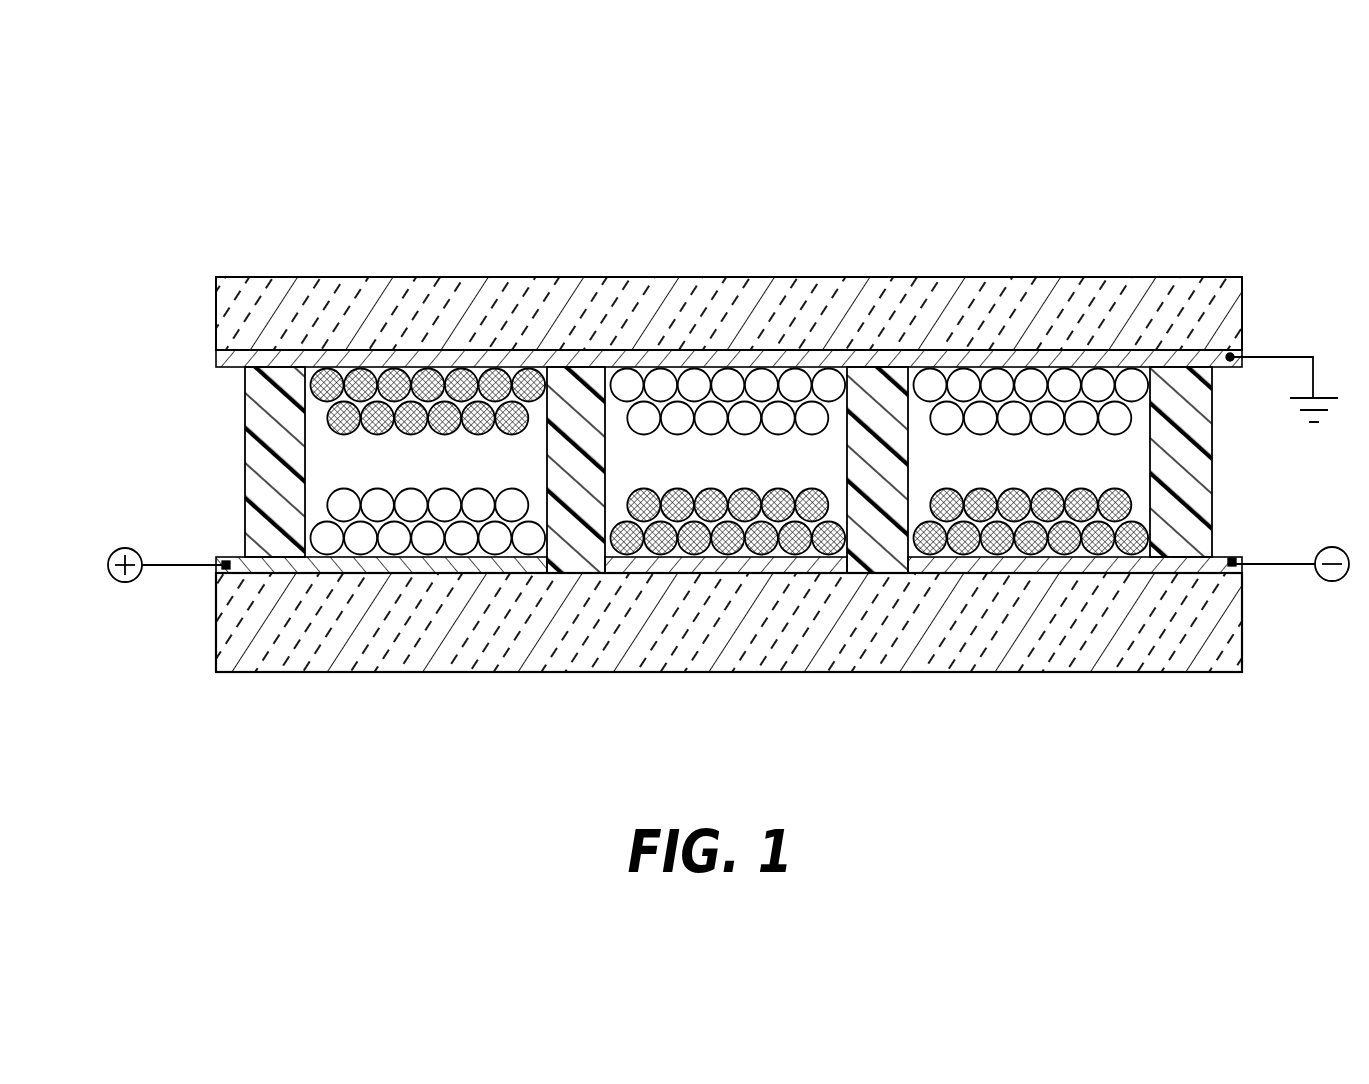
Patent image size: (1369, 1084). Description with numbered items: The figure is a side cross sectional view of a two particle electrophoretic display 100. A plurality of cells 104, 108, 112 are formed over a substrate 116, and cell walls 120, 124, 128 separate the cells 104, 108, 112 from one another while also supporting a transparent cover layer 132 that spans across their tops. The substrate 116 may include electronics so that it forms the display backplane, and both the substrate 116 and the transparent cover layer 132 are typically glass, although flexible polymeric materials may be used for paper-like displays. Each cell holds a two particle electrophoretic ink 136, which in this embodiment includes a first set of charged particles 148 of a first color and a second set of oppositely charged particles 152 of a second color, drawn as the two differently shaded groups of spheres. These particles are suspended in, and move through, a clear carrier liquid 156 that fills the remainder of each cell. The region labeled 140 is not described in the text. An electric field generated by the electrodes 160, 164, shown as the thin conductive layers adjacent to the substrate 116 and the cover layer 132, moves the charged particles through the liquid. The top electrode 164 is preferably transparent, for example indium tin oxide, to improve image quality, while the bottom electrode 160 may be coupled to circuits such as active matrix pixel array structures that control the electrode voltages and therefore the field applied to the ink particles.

The electrophoretic display 100 is at (203, 178).
The cell 104 is at (339, 573).
The cell 108 is at (607, 573).
The cell 112 is at (908, 573).
The substrate 116 is at (223, 612).
The cell wall 120 is at (277, 390).
The cell wall 124 is at (583, 390).
The cell wall 128 is at (887, 390).
The transparent cover layer 132 is at (1050, 287).
The electrophoretic ink 136 is at (327, 367).
The second cell region 140 is at (625, 367).
The first set of charged particles 148 is at (333, 386).
The second set of oppositely charged particles 152 is at (340, 507).
The clear carrier liquid 156 is at (426, 459).
The bottom electrode 160 is at (227, 557).
The top electrode 164 is at (216, 358).